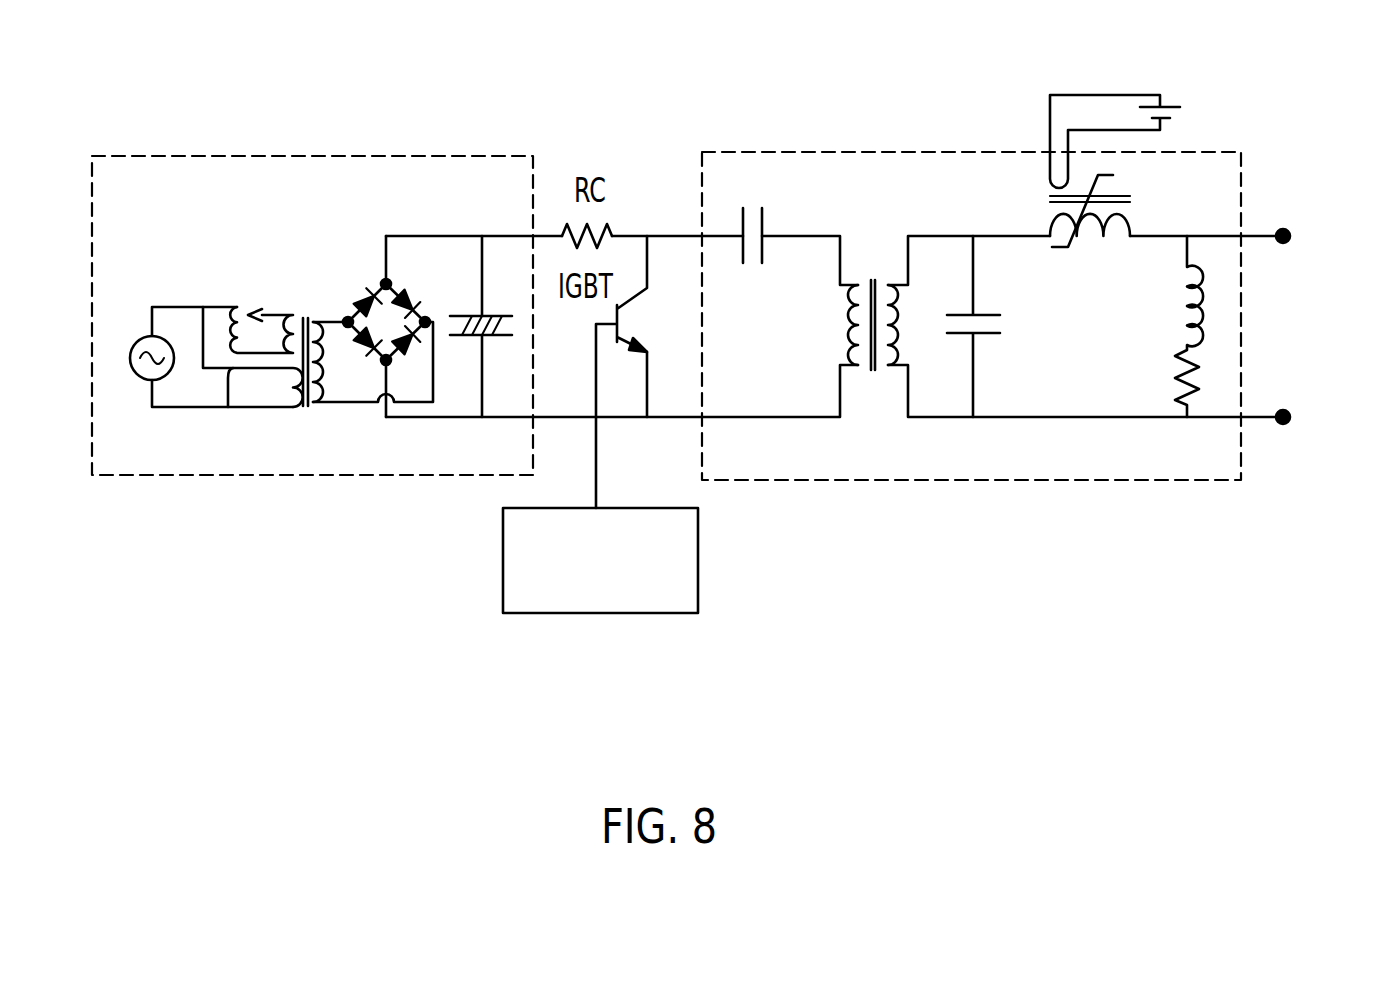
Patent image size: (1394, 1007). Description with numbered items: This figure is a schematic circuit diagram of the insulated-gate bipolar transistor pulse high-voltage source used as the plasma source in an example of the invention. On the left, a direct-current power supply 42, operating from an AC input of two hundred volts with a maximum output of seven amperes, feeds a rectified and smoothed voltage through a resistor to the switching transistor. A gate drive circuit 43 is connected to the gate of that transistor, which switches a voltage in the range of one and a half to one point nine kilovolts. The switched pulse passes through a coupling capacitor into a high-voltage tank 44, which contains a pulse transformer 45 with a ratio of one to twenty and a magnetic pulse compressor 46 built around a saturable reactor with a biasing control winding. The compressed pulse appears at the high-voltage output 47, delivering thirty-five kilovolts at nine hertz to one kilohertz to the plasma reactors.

The direct-current power supply 42 is at (135, 475).
The gate drive circuit 43 is at (543, 613).
The high-voltage tank 44 is at (813, 480).
The pulse transformer 45 is at (833, 213).
The magnetic pulse compressor 46 is at (972, 77).
The high-voltage output 47 is at (1305, 223).